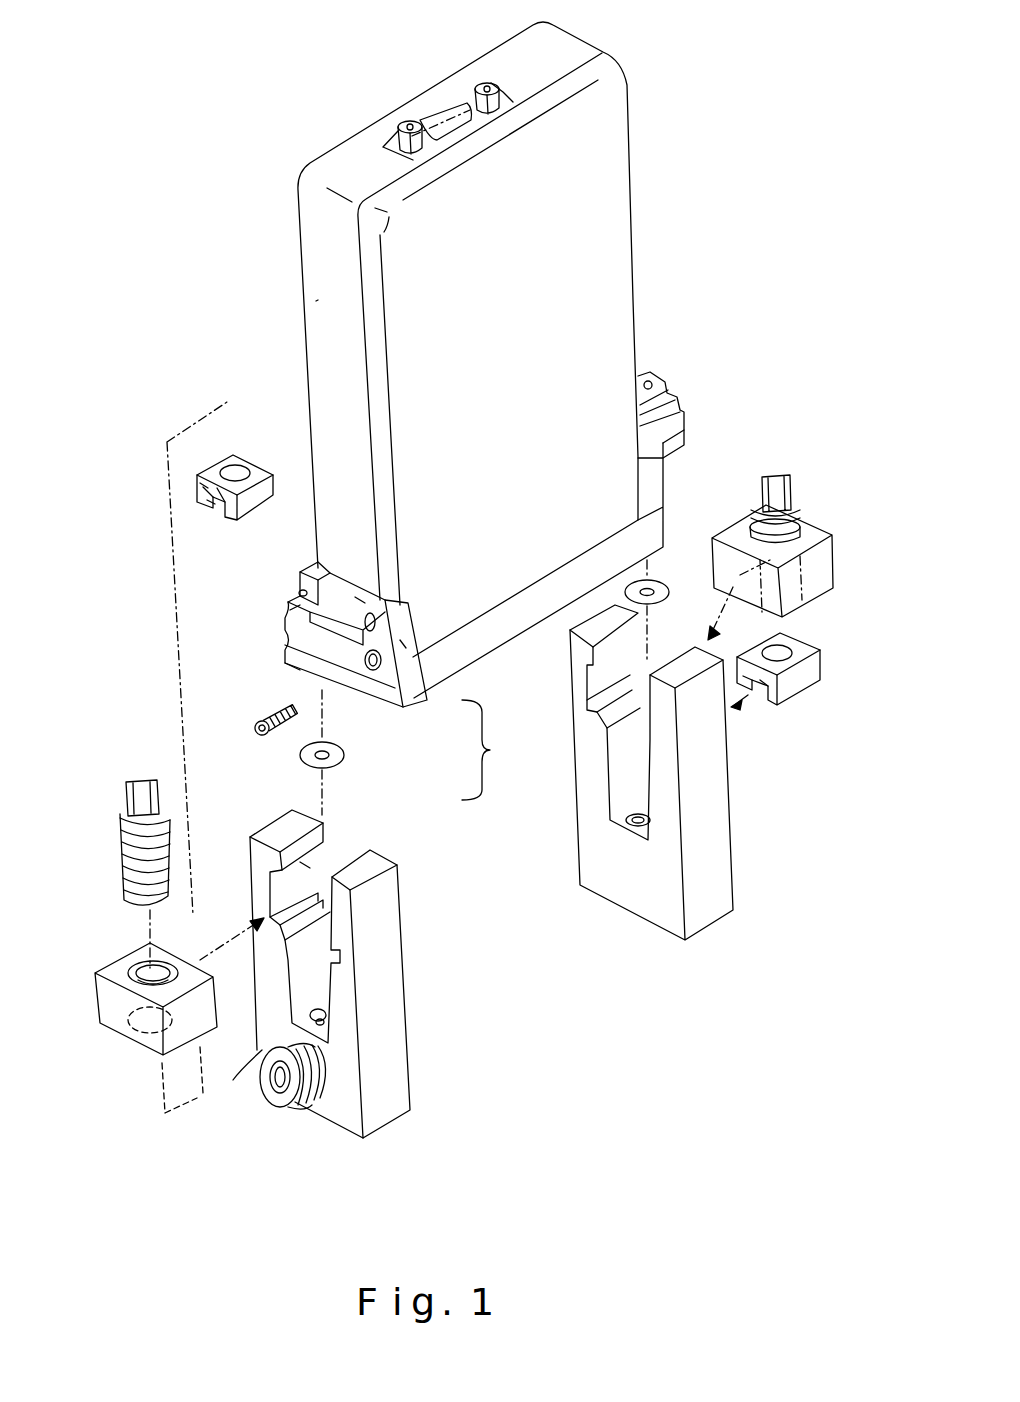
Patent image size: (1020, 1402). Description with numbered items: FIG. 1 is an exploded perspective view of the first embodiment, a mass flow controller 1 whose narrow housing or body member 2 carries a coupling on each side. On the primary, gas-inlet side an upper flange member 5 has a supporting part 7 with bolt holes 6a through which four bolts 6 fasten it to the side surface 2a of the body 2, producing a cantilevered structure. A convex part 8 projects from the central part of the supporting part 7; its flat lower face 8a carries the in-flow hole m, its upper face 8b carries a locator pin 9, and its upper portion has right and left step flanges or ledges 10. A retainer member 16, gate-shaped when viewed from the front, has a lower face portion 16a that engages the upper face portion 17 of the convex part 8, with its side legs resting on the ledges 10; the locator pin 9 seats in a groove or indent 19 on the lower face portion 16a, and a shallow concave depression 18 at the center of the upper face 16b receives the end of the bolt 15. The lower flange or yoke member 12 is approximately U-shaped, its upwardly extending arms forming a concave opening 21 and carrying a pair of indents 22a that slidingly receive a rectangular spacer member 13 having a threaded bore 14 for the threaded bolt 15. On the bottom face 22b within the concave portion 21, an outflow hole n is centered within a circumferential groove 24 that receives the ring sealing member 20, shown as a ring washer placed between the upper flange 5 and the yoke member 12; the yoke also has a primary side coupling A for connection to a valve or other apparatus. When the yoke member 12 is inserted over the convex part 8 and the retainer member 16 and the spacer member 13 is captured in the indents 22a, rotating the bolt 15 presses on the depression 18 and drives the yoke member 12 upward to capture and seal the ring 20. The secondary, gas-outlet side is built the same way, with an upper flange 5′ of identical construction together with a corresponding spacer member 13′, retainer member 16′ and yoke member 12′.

The mass flow controller 1 is at (472, 360).
The housing or narrow body member 2 is at (503, 360).
The side surface of the body 2a is at (312, 232).
The upper flange member 5 is at (487, 750).
The upper flange on the secondary side 5′ is at (685, 423).
The bolts 6 is at (256, 722).
The bolt holes 6a is at (370, 683).
The supporting part 7 is at (403, 645).
The convex part 8 is at (334, 603).
The lower face of the convex part 8a is at (292, 685).
The upper face of the convex part 8b is at (318, 578).
The locator pin 9 is at (303, 593).
The step flanges or ledges 10 is at (290, 610).
The lower flange or yoke member 12 is at (353, 997).
The mounting bracket 12′ is at (820, 858).
The spacer member 13 is at (136, 1017).
The spacer member on the secondary side 13′ is at (838, 556).
The bolt hole or bore 14 is at (130, 972).
The threaded bolt 15 is at (120, 860).
The retainer member 16 is at (185, 618).
The retainer member on the secondary side 16′ is at (820, 677).
The lower face portion of the retainer member 16a is at (217, 507).
The upper face of the retainer member 16b is at (235, 466).
The upper face portion of the convex part 17 is at (338, 580).
The shallow concave depression 18 is at (205, 478).
The locator pin groove or indent 19 is at (188, 493).
The ring sealing member 20 is at (300, 766).
The concave opening or part 21 is at (303, 970).
The indents 22a is at (355, 910).
The bottom face 22b is at (330, 1037).
The circumferential groove 24 is at (325, 1003).
The in-flow hole m is at (290, 647).
The outflow port or hole n is at (330, 1020).
The primary side coupling A is at (300, 1093).